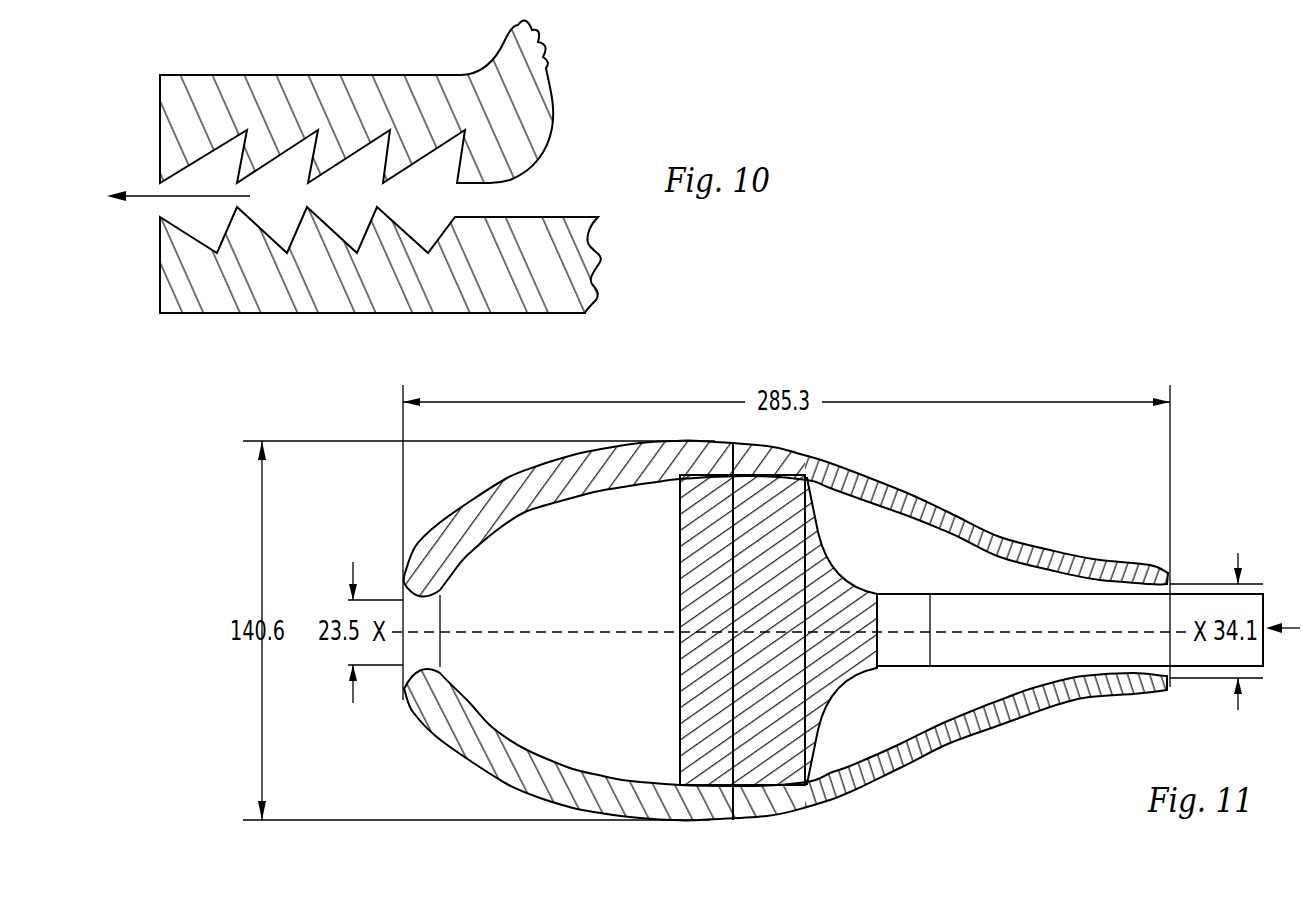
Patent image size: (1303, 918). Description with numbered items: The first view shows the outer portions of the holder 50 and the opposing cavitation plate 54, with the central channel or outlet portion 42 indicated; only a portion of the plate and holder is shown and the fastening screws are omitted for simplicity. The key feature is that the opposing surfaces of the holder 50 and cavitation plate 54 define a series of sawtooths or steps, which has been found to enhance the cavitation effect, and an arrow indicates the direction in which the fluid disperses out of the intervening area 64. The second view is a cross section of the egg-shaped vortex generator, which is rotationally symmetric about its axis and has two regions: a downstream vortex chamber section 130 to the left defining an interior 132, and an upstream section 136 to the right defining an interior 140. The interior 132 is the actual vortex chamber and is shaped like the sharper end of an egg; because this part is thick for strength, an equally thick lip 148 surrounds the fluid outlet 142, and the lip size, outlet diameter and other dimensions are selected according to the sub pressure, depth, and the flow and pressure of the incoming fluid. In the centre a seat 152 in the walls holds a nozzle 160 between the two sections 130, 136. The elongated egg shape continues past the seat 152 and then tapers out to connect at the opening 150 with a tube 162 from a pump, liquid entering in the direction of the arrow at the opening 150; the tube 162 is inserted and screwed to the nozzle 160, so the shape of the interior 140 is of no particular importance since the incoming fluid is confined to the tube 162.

In FIG. 10, the central channel or outlet portion 42 is at (613, 138).
In FIG. 10, the holder 50 is at (273, 75).
In FIG. 10, the cavitation plate 54 is at (210, 297).
In FIG. 10, the intervening area 64 is at (197, 197).
In FIG. 11, the vortex chamber (downstream) section 130 is at (572, 456).
In FIG. 11, the interior 132 is at (523, 700).
In FIG. 11, the (upstream) section 136 is at (1010, 546).
In FIG. 11, the interior 140 is at (967, 693).
In FIG. 11, the fluid outlet 142 is at (433, 617).
In FIG. 11, the lip 148 is at (403, 633).
In FIG. 11, the opening 150 is at (1187, 610).
In FIG. 11, the seat 152 is at (767, 760).
In FIG. 11, the nozzle 160 is at (820, 543).
In FIG. 11, the tube 162 is at (1033, 593).